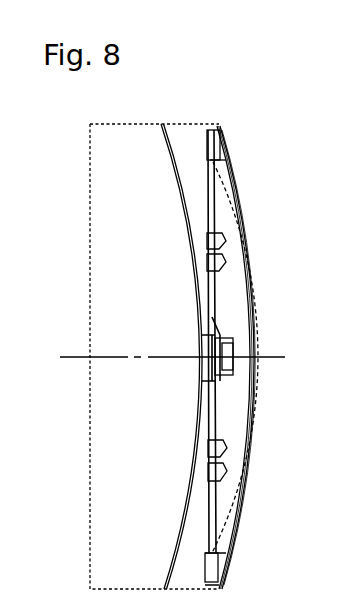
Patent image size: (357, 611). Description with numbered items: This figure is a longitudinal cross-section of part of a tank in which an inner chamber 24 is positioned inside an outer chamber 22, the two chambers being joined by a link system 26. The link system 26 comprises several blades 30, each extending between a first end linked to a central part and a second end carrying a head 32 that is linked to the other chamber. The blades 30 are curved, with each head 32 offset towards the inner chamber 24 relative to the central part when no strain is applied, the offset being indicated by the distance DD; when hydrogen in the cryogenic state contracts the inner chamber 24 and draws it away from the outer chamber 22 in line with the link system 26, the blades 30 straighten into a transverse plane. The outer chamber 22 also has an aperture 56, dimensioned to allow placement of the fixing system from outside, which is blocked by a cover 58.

The outer chamber 22 is at (263, 357).
The inner chamber 24 is at (174, 147).
The link system 26 is at (228, 303).
The blade 30 is at (217, 204).
The head 32 is at (198, 156).
The aperture 56 is at (257, 428).
The cover 58 is at (250, 458).
The distance DD is at (190, 347).